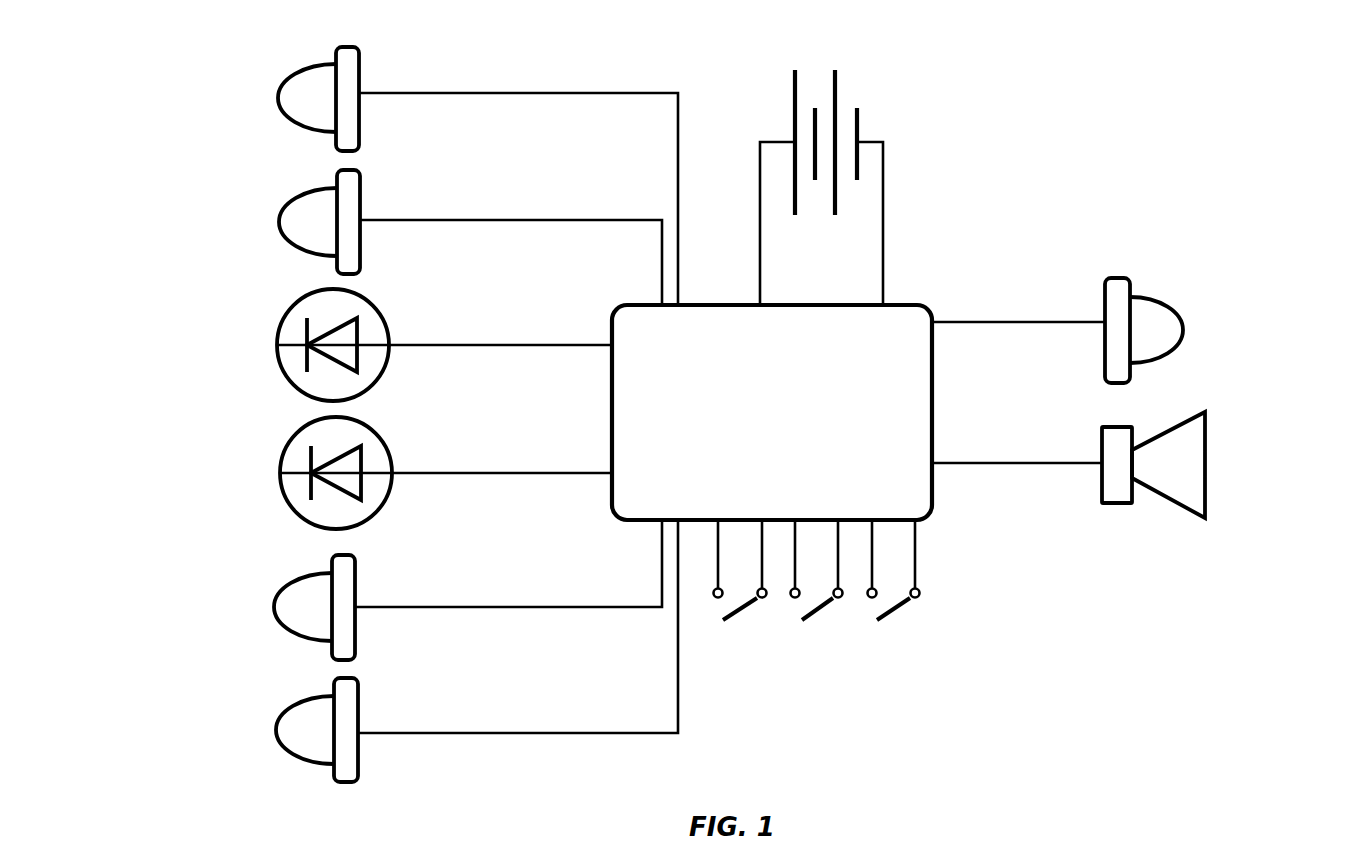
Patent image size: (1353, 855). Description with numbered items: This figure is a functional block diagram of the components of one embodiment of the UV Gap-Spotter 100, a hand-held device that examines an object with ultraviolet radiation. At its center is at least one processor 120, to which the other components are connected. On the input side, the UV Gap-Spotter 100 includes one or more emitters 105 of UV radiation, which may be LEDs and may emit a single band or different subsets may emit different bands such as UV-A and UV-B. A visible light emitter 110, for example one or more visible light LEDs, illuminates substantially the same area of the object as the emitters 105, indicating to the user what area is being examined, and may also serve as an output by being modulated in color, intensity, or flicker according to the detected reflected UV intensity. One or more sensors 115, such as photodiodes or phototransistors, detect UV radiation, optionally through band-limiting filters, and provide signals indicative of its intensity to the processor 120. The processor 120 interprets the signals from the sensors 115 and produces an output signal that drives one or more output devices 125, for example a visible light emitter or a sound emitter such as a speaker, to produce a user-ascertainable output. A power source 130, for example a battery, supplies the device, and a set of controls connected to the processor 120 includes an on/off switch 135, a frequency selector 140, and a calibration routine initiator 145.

The UV Gap-Spotter 100 is at (1068, 134).
The emitters 105 is at (243, 50).
The visible light emitter 110 is at (247, 565).
The sensors 115 is at (243, 292).
The processor 120 is at (738, 419).
The output devices 125 is at (1235, 283).
The power source 130 is at (790, 108).
The on/off switch 135 is at (755, 606).
The frequency selector 140 is at (830, 610).
The calibration routine initiator 145 is at (898, 617).